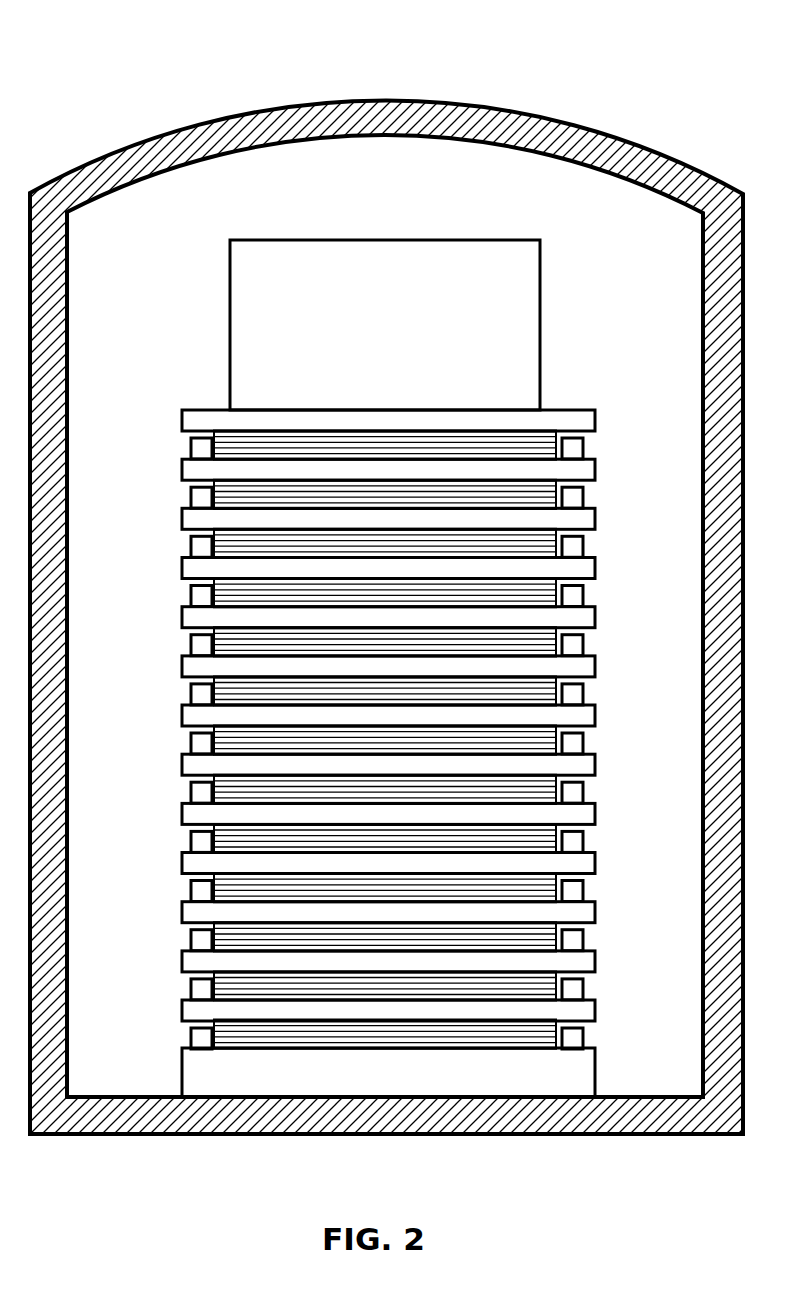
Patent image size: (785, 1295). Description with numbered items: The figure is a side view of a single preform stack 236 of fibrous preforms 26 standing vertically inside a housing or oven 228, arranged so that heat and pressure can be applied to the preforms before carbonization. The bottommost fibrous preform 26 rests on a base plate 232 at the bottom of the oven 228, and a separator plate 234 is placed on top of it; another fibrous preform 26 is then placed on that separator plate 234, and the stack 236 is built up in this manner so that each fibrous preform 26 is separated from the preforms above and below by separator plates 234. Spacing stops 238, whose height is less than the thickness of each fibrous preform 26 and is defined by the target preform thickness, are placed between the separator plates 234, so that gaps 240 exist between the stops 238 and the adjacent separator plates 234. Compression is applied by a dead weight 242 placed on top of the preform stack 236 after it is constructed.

The oven 228 is at (557, 113).
The dead weight 242 is at (228, 293).
The preform stack 236 is at (198, 400).
The separator plate 234 is at (182, 418).
The gap 240 is at (182, 440).
The spacing stop 238 is at (188, 493).
The fibrous preform 26 is at (507, 428).
The base plate 232 is at (598, 1072).